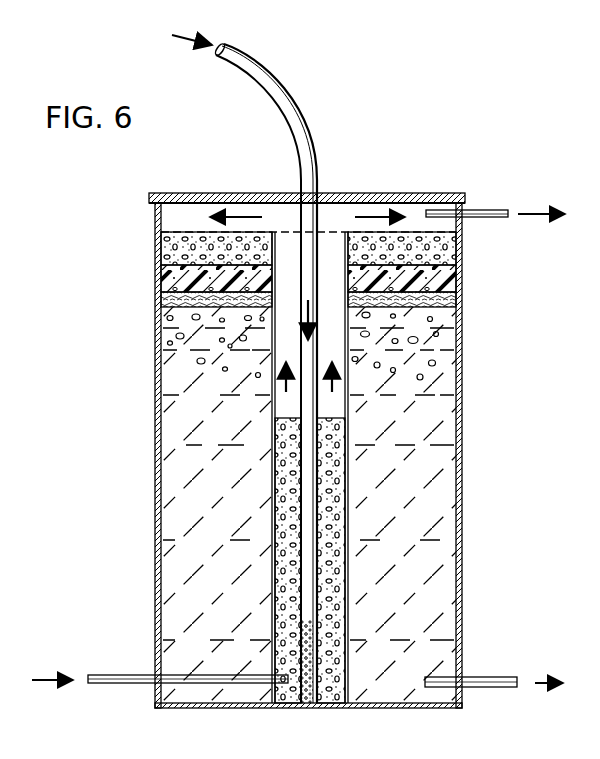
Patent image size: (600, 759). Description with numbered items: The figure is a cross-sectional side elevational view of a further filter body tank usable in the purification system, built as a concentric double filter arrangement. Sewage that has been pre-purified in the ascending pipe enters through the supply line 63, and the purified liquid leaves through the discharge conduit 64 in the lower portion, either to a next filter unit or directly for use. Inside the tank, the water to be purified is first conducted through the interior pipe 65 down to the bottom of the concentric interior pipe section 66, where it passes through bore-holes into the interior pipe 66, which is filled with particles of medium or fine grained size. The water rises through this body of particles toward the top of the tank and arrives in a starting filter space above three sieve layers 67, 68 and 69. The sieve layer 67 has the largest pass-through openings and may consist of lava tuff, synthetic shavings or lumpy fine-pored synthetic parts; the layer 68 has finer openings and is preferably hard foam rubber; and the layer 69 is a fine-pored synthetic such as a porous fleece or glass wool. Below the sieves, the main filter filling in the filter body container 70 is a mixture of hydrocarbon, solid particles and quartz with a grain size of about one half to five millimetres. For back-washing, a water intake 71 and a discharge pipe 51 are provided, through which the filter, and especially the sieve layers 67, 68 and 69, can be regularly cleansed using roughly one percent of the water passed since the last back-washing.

The discharge pipe 51 is at (485, 210).
The supply line 63 is at (298, 129).
The discharge conduit 64 is at (490, 687).
The interior pipe 65 is at (310, 566).
The concentric interior pipe section 66 is at (346, 614).
The sieve layer 67 is at (457, 245).
The sieve layer 68 is at (457, 279).
The sieve layer 69 is at (457, 300).
The filter body container 70 is at (157, 465).
The water intake 71 is at (118, 683).